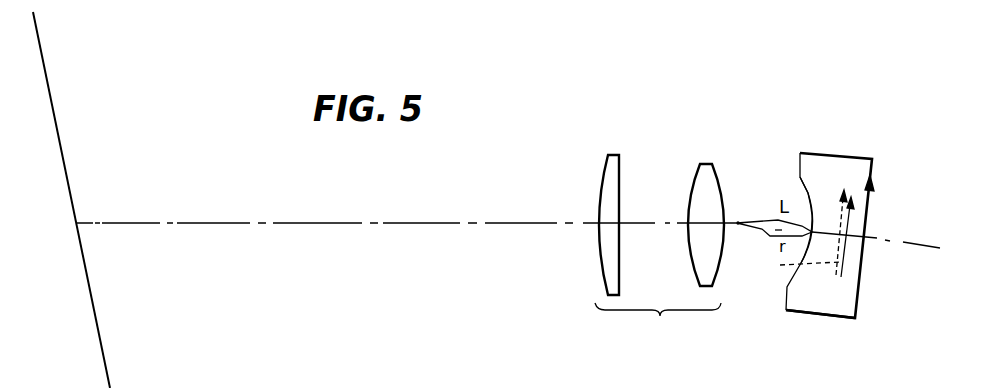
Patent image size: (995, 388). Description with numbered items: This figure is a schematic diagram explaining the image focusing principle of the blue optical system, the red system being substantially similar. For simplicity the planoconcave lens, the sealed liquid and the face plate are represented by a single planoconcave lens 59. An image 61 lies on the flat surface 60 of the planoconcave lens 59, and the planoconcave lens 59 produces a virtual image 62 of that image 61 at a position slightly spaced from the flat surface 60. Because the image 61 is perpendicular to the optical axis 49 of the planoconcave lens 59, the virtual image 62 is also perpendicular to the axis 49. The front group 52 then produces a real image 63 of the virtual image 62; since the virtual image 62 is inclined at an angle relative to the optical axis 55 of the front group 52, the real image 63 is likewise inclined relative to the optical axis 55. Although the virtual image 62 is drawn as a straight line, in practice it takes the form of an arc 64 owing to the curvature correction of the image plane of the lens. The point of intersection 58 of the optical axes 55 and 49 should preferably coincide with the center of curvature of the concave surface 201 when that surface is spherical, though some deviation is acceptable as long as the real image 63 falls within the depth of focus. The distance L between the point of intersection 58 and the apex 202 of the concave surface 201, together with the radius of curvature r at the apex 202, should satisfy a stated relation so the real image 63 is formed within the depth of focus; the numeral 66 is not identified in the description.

The real image 63 is at (52, 100).
The optical axis of the front group 55 is at (422, 224).
The front group 52 is at (659, 250).
The point of intersection 58 is at (738, 222).
The arc 64 is at (798, 263).
The planoconcave lens 59 is at (850, 158).
The concave surface 201 is at (808, 192).
The apex 202 is at (812, 232).
The image 61 is at (868, 195).
The virtual image 62 is at (858, 262).
The flat surface 60 is at (858, 313).
The optical axis of the planoconcave lens 49 is at (915, 241).
The sensor / detector 66 is at (422, 380).